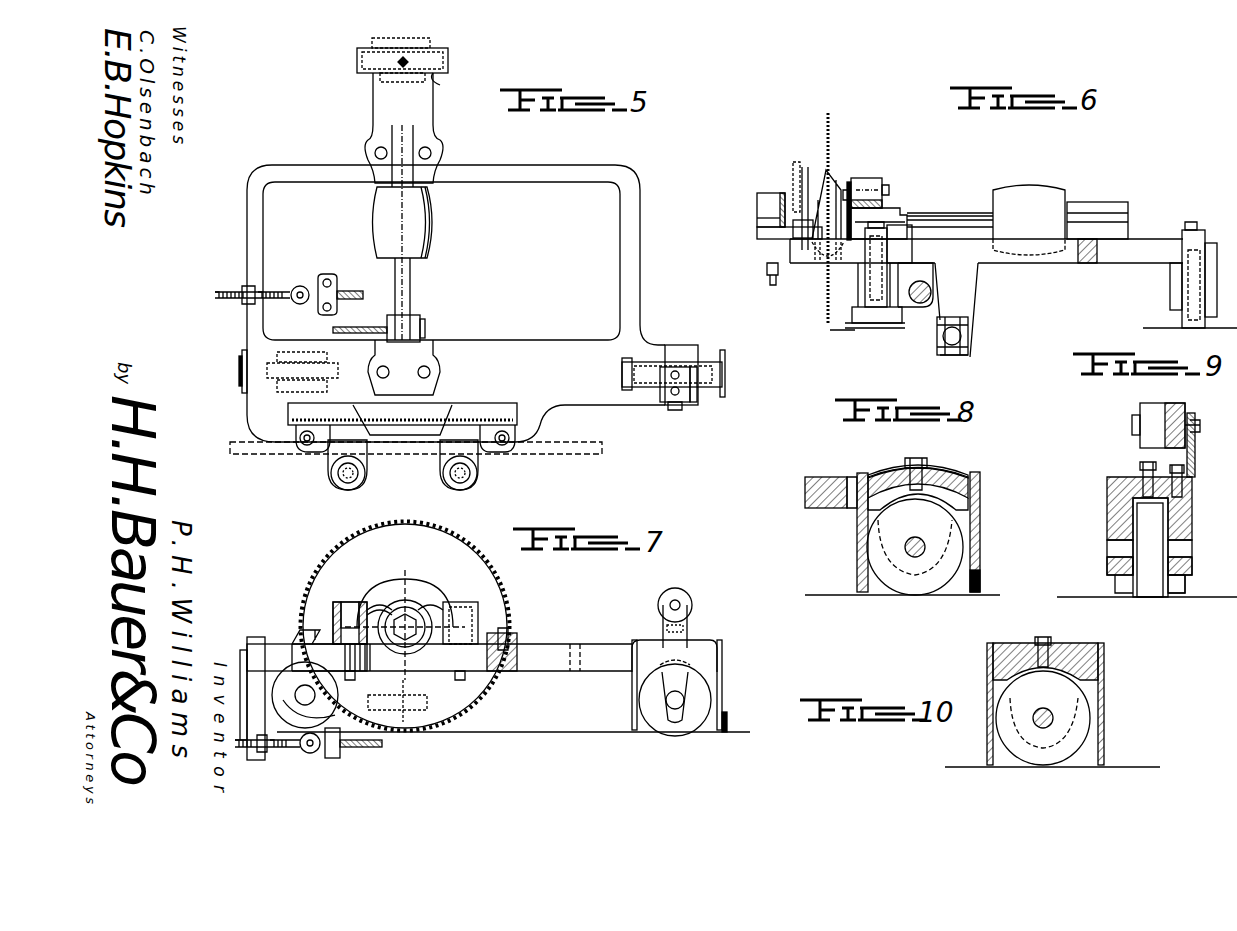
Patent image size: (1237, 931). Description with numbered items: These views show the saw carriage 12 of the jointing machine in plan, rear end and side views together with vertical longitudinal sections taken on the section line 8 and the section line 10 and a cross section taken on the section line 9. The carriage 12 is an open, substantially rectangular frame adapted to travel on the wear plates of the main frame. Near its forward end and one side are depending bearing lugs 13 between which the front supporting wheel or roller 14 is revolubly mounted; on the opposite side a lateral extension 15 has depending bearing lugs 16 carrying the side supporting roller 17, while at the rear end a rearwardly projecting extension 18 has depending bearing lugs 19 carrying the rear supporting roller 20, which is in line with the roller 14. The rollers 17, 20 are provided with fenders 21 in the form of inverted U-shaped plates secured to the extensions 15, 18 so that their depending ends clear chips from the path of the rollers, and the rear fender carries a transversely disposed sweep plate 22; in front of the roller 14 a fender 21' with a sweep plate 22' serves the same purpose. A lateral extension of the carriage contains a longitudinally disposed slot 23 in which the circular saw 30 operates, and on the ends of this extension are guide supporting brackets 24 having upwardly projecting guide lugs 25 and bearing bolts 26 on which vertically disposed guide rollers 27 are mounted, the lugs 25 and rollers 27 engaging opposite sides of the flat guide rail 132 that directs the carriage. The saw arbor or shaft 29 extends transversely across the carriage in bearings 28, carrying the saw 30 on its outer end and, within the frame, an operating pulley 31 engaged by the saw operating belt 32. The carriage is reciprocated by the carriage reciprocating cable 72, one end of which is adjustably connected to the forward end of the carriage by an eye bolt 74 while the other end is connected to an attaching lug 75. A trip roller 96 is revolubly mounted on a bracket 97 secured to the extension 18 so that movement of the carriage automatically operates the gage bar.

In FIG. 5, the section line 8— 8 is at (777, 373).
In FIG. 5, the section line 9— 9 is at (684, 443).
In FIG. 5, the section line 10— 10 is at (520, 62).
In FIG. 5, the saw carriage 12 is at (632, 195).
In FIG. 6, the saw carriage 12 is at (1048, 262).
In FIG. 7, the saw carriage 12 is at (568, 644).
In FIG. 5, the depending bearing lugs 13 is at (270, 355).
In FIG. 7, the depending bearing lugs 13 is at (300, 685).
In FIG. 5, the front supporting wheel or roller 14 is at (260, 395).
In FIG. 7, the front supporting wheel or roller 14 is at (325, 712).
In FIG. 5, the lateral extension 15 is at (370, 112).
In FIG. 6, the lateral extension 15 is at (1133, 265).
In FIG. 10, the lateral extension 15 is at (1098, 660).
In FIG. 5, the depending bearing lugs 16 is at (400, 40).
In FIG. 6, the depending bearing lugs 16 is at (1170, 290).
In FIG. 10, the depending bearing lugs 16 is at (1065, 718).
In FIG. 5, the side supporting roller 17 is at (435, 55).
In FIG. 6, the side supporting roller 17 is at (1217, 300).
In FIG. 10, the side supporting roller 17 is at (1075, 745).
In FIG. 5, the rearwardly projecting extension 18 is at (683, 345).
In FIG. 6, the rearwardly projecting extension 18 is at (900, 240).
In FIG. 9, the rearwardly projecting extension 18 is at (1107, 497).
In FIG. 8, the rearwardly projecting extension 18 is at (968, 490).
In FIG. 7, the rearwardly projecting extension 18 is at (700, 658).
In FIG. 6, the depending bearing lugs 19 is at (858, 295).
In FIG. 9, the depending bearing lugs 19 is at (1107, 530).
In FIG. 8, the depending bearing lugs 19 is at (857, 548).
In FIG. 7, the depending bearing lugs 19 is at (665, 693).
In FIG. 5, the rear supporting roller 20 is at (640, 378).
In FIG. 6, the rear supporting roller 20 is at (877, 323).
In FIG. 9, the rear supporting roller 20 is at (1150, 517).
In FIG. 7, the rear supporting roller 20 is at (690, 705).
In FIG. 5, the fenders 21 is at (582, 248).
In FIG. 6, the fenders 21 is at (843, 265).
In FIG. 9, the fenders 21 is at (1147, 606).
In FIG. 8, the fenders 21 is at (909, 533).
In FIG. 10, the fenders 21 is at (1052, 705).
In FIG. 7, the fenders 21 is at (700, 685).
In FIG. 5, the fender 21' is at (223, 371).
In FIG. 7, the fender 21' is at (302, 685).
In FIG. 5, the sweep plate 22 is at (738, 365).
In FIG. 6, the sweep plate 22 is at (875, 348).
In FIG. 9, the sweep plate 22 is at (1193, 606).
In FIG. 8, the sweep plate 22 is at (994, 581).
In FIG. 7, the sweep plate 22 is at (742, 720).
In FIG. 5, the sweep plate 22' is at (220, 379).
In FIG. 7, the sweep plate 22' is at (229, 691).
In FIG. 5, the longitudinally disposed slot 23 is at (480, 412).
In FIG. 5, the guide supporting brackets 24 is at (318, 445).
In FIG. 6, the guide supporting brackets 24 is at (770, 232).
In FIG. 7, the guide supporting brackets 24 is at (300, 640).
In FIG. 5, the guide lugs 25 is at (330, 445).
In FIG. 6, the guide lugs 25 is at (806, 165).
In FIG. 5, the bearing bolts 26 is at (345, 478).
In FIG. 6, the bearing bolts 26 is at (770, 285).
In FIG. 7, the bearing bolts 26 is at (350, 604).
In FIG. 5, the guide rollers 27 is at (352, 485).
In FIG. 6, the guide rollers 27 is at (757, 210).
In FIG. 7, the guide rollers 27 is at (385, 613).
In FIG. 5, the bearings 28 is at (405, 147).
In FIG. 6, the bearings 28 is at (900, 208).
In FIG. 5, the saw arbor or shaft 29 is at (405, 300).
In FIG. 6, the saw arbor or shaft 29 is at (960, 213).
In FIG. 7, the saw arbor or shaft 29 is at (405, 627).
In FIG. 5, the circular saw 30 is at (515, 420).
In FIG. 6, the circular saw 30 is at (830, 125).
In FIG. 7, the circular saw 30 is at (405, 626).
In FIG. 5, the operating pulley 31 is at (428, 232).
In FIG. 6, the operating pulley 31 is at (1035, 195).
In FIG. 5, the saw operating belt 32 is at (565, 455).
In FIG. 5, the carriage reciprocating cable 72 is at (340, 290).
In FIG. 6, the carriage reciprocating cable 72 is at (968, 338).
In FIG. 7, the carriage reciprocating cable 72 is at (360, 747).
In FIG. 5, the eye bolt 74 is at (295, 286).
In FIG. 7, the eye bolt 74 is at (290, 750).
In FIG. 5, the attaching lug 75 is at (425, 327).
In FIG. 6, the attaching lug 75 is at (925, 275).
In FIG. 7, the attaching lug 75 is at (410, 722).
In FIG. 5, the trip roller 96 is at (662, 402).
In FIG. 6, the trip roller 96 is at (880, 185).
In FIG. 9, the trip roller 96 is at (1140, 412).
In FIG. 7, the trip roller 96 is at (690, 600).
In FIG. 5, the bracket 97 is at (685, 408).
In FIG. 6, the bracket 97 is at (849, 182).
In FIG. 9, the bracket 97 is at (1195, 450).
In FIG. 7, the bracket 97 is at (683, 635).
In FIG. 6, the guide rail 132 is at (790, 172).